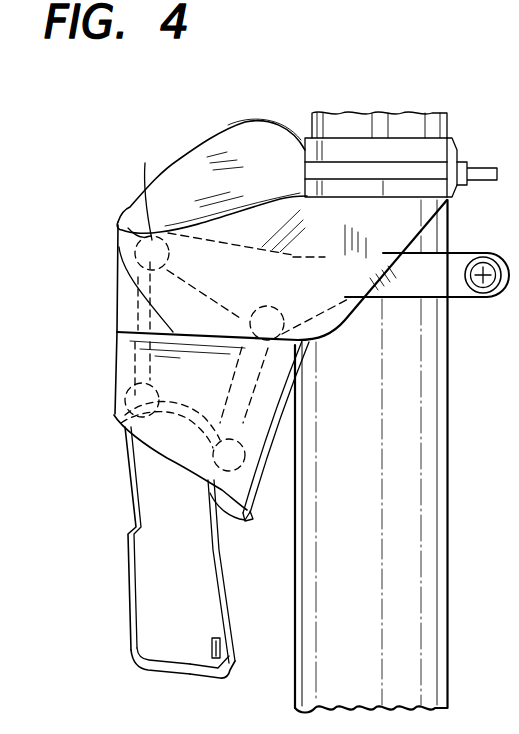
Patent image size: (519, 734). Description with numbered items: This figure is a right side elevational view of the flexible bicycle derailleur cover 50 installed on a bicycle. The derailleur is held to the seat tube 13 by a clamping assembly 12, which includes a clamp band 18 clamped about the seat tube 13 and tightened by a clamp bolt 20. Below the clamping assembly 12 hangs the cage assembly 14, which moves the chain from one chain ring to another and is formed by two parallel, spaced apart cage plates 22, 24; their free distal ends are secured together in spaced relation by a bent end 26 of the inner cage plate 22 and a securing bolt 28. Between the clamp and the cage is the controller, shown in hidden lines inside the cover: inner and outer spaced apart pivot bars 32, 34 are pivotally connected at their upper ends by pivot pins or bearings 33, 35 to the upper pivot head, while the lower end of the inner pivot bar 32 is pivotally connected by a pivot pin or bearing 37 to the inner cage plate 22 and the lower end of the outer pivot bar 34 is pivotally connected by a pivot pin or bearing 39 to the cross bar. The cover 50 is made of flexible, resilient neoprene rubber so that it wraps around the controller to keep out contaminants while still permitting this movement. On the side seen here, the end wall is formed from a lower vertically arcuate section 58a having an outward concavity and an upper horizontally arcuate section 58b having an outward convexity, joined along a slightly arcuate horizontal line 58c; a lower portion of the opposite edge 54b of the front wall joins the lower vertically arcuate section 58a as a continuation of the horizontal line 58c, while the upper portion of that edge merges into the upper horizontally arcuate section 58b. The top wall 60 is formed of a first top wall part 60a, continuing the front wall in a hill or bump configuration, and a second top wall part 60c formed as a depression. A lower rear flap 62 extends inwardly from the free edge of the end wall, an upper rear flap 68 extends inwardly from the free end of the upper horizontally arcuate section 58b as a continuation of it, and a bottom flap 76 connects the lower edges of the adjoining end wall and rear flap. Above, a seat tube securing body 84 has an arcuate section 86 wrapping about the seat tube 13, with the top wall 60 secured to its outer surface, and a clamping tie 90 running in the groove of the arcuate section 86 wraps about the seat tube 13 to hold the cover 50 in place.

The clamping assembly 12 is at (461, 246).
The seat tube 13 is at (432, 519).
The cage assembly 14 is at (129, 571).
The clamp band 18 is at (393, 300).
The clamp bolt 20 is at (478, 292).
The cage plate 22 is at (229, 591).
The cage plate 24 is at (130, 620).
The bent end 26 is at (185, 678).
The securing bolt 28 is at (213, 646).
The inner pivot bar 32 is at (240, 402).
The pivot pin or bearing 33 is at (262, 310).
The outer pivot bar 34 is at (118, 233).
The pivot pin or bearing 35 is at (137, 185).
The pivot pin or bearing 37 is at (215, 457).
The pivot pin or bearing 39 is at (117, 420).
The cover 50 is at (118, 192).
The opposite edge of outer front wall 54b is at (118, 392).
The lower vertically arcuate section 58a is at (117, 368).
The upper horizontally arcuate section 58b is at (128, 313).
The horizontal line 58c is at (138, 283).
The top wall 60 is at (272, 120).
The first top wall part 60a is at (284, 132).
The second top wall part 60c is at (221, 145).
The lower rear flap 62 is at (260, 472).
The upper rear flap 68 is at (397, 212).
The bottom flap 76 is at (228, 533).
The seat tube securing body 84 is at (456, 139).
The arcuate section 86 is at (370, 150).
The clamping tie 90 is at (327, 168).